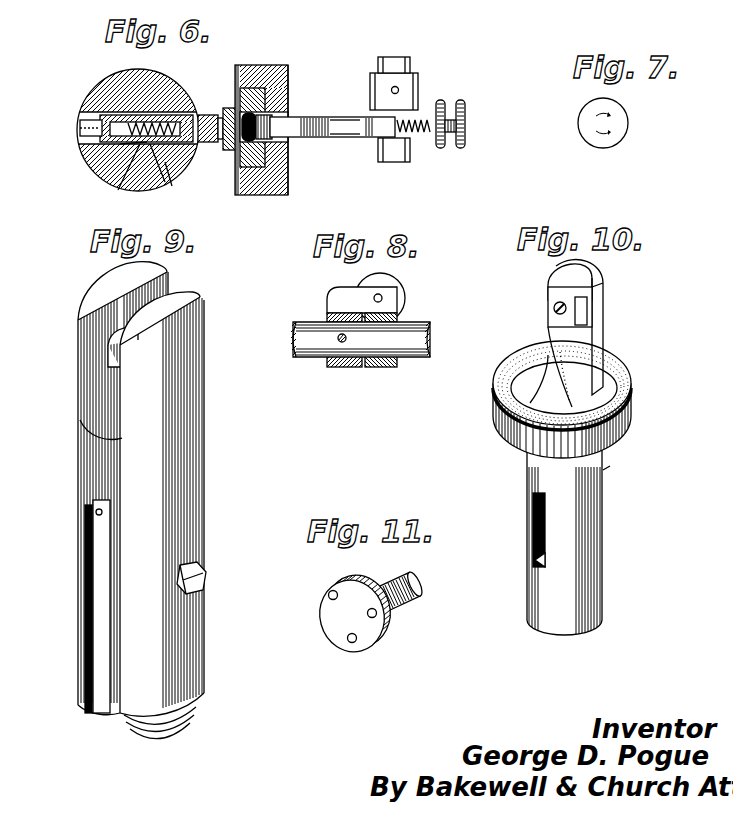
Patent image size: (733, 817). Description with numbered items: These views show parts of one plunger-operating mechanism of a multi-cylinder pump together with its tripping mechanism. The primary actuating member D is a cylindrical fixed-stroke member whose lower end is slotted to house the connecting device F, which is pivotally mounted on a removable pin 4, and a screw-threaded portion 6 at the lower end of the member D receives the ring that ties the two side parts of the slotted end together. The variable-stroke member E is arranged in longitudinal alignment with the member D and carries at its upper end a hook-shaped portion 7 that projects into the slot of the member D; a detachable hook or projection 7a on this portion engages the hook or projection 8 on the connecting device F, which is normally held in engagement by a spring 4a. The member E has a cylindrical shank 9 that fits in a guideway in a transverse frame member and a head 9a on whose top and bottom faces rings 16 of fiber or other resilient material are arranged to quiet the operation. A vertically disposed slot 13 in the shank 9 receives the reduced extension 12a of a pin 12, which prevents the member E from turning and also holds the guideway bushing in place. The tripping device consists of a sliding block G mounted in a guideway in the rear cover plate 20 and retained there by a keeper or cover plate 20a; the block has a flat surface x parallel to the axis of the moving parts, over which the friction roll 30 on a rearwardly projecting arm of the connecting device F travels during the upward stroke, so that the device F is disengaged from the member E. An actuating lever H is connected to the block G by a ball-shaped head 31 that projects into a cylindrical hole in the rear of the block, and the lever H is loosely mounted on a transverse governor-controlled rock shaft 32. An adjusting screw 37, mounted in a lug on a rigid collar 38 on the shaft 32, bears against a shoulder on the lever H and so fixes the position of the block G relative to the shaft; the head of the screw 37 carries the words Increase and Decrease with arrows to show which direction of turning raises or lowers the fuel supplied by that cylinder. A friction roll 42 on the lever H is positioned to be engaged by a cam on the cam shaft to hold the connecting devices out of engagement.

In FIG. 6, the primary actuating member D is at (103, 80).
In FIG. 9, the primary actuating member D is at (203, 455).
In FIG. 6, the connecting device F is at (203, 114).
In FIG. 6, the spring 4a is at (98, 125).
In FIG. 6, the hook or projection 7a is at (147, 143).
In FIG. 10, the hook or projection 7a is at (583, 308).
In FIG. 6, the variable-stroke member E is at (168, 185).
In FIG. 10, the variable-stroke member E is at (612, 467).
In FIG. 6, the friction roll 30 is at (212, 117).
In FIG. 6, the flat surface x is at (226, 148).
In FIG. 6, the tripping block G is at (280, 97).
In FIG. 6, the keeper or cover plate 20a is at (242, 207).
In FIG. 6, the rear cover plate 20 is at (280, 182).
In FIG. 6, the ball-shaped head 31 is at (236, 152).
In FIG. 6, the actuating lever H is at (292, 118).
In FIG. 8, the actuating lever H is at (390, 367).
In FIG. 6, the friction roll 42 is at (372, 136).
In FIG. 6, the rigid collar 38 is at (418, 87).
In FIG. 8, the rigid collar 38 is at (345, 367).
In FIG. 6, the rock shaft 32 is at (412, 65).
In FIG. 8, the rock shaft 32 is at (307, 327).
In FIG. 6, the adjusting screw 37 is at (466, 125).
In FIG. 7, the adjusting screw 37 is at (628, 123).
In FIG. 8, the adjusting screw 37 is at (398, 297).
In FIG. 6, the hook or projection 8 is at (400, 52).
In FIG. 9, the removable pin 4 is at (203, 577).
In FIG. 9, the screw-threaded portion 6 is at (153, 728).
In FIG. 10, the hook-shaped portion 7 is at (590, 337).
In FIG. 10, the resilient rings 16 is at (506, 417).
In FIG. 10, the head 9a is at (620, 420).
In FIG. 10, the cylindrical shank 9 is at (588, 582).
In FIG. 10, the vertically-disposed slot 13 is at (534, 535).
In FIG. 11, the guide pin 12 is at (390, 620).
In FIG. 11, the reduced extension 12a is at (409, 590).